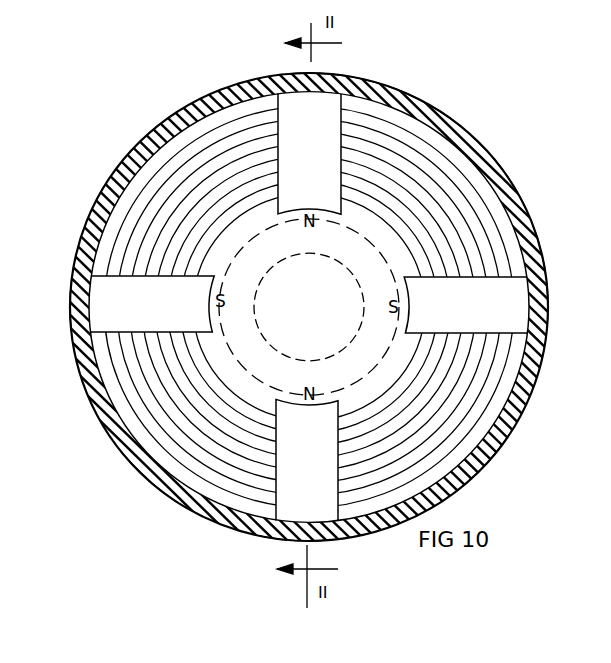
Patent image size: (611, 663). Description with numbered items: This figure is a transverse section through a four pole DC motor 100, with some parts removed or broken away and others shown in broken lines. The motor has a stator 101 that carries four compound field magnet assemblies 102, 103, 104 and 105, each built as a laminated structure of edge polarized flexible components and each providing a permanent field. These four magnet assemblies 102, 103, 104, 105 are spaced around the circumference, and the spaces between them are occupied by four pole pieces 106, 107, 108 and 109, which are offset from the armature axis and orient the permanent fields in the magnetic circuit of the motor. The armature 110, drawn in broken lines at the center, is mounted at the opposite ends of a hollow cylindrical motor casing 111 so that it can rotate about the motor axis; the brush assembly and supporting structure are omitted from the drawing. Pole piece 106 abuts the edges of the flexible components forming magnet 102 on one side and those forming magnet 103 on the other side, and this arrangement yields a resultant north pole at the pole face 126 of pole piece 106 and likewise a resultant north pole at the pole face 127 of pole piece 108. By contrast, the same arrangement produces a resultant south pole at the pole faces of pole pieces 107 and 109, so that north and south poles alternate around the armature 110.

The four pole DC motor 100 is at (430, 96).
The stator 101 is at (388, 83).
The compound field magnet assembly 102 is at (139, 143).
The compound field magnet assembly 103 is at (513, 184).
The compound field magnet assembly 104 is at (490, 462).
The compound field magnet assembly 105 is at (156, 467).
The pole piece 106 is at (322, 80).
The pole piece 107 is at (72, 313).
The pole piece 108 is at (292, 541).
The pole piece 109 is at (610, 306).
The hollow cylindrical motor casing 111 is at (543, 250).
The armature 110 is at (315, 307).
The pole face 126 is at (327, 163).
The pole face 127 is at (288, 452).